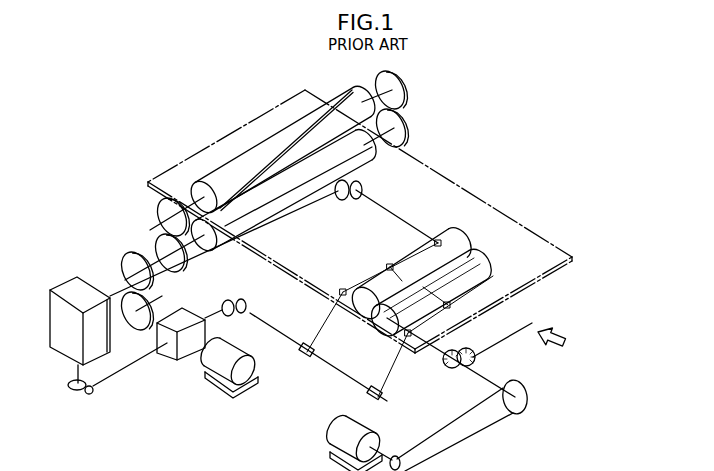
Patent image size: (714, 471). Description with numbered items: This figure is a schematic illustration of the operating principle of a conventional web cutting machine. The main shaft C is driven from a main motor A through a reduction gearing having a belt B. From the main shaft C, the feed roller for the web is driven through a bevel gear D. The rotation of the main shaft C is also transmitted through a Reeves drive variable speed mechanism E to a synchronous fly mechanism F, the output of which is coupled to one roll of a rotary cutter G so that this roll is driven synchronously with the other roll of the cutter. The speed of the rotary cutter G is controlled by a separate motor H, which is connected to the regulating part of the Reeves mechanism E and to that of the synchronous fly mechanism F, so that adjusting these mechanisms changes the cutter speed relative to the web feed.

The main motor A is at (337, 433).
The belt B is at (445, 448).
The main shaft C is at (483, 378).
The bevel gear D is at (462, 367).
The Reeves drive variable speed mechanism E is at (463, 250).
The synchronous fly mechanism F is at (60, 327).
The rotary cutter G is at (355, 147).
The motor H is at (213, 362).